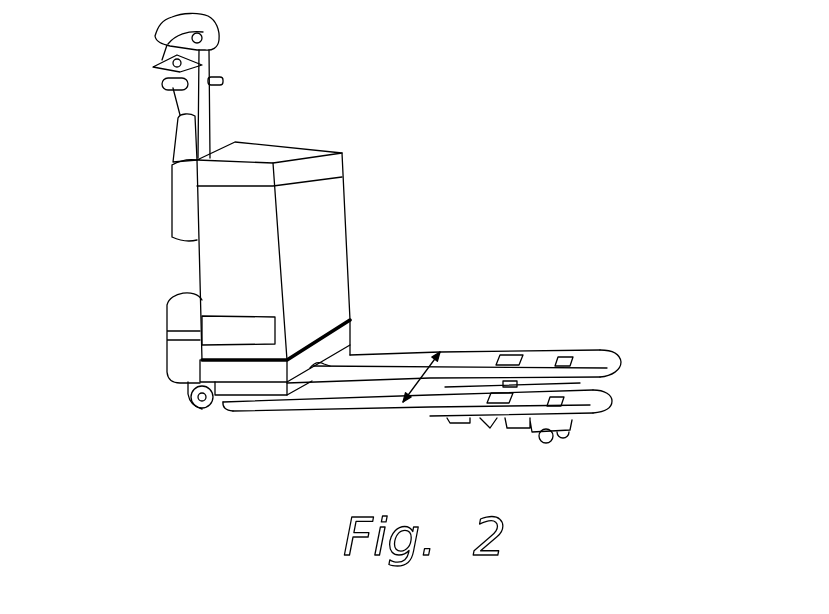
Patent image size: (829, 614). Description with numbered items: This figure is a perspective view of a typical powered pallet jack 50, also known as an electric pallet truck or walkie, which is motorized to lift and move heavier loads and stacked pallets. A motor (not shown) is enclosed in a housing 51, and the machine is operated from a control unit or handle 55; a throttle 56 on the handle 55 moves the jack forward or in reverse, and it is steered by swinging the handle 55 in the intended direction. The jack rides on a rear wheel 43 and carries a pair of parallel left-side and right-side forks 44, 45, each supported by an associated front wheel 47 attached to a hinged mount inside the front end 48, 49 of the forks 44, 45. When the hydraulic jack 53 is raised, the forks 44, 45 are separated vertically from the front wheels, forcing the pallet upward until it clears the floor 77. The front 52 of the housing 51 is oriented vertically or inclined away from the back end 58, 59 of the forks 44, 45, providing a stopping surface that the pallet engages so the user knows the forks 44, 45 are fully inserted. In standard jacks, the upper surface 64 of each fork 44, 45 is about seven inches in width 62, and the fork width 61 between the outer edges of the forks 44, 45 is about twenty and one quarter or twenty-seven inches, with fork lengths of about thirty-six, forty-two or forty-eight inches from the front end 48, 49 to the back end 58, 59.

The powered pallet jack 50 is at (474, 136).
The handle 55 is at (157, 32).
The throttle 56 is at (162, 63).
The housing 51 is at (303, 145).
The front of the housing 52 is at (327, 198).
The hydraulic jack 53 is at (303, 383).
The rear wheel 43 is at (190, 410).
The back end of the fork 58 is at (358, 353).
The back end of the fork 59 is at (318, 392).
The front end of the fork 48 is at (622, 355).
The front end of the fork 49 is at (613, 402).
The upper surface of the fork 64 is at (485, 362).
The width 62 is at (389, 366).
The left-side fork 44 is at (470, 355).
The fork width 61 is at (440, 377).
The right-side fork 45 is at (397, 397).
The front wheel 47 is at (560, 433).
The floor 77 is at (490, 487).